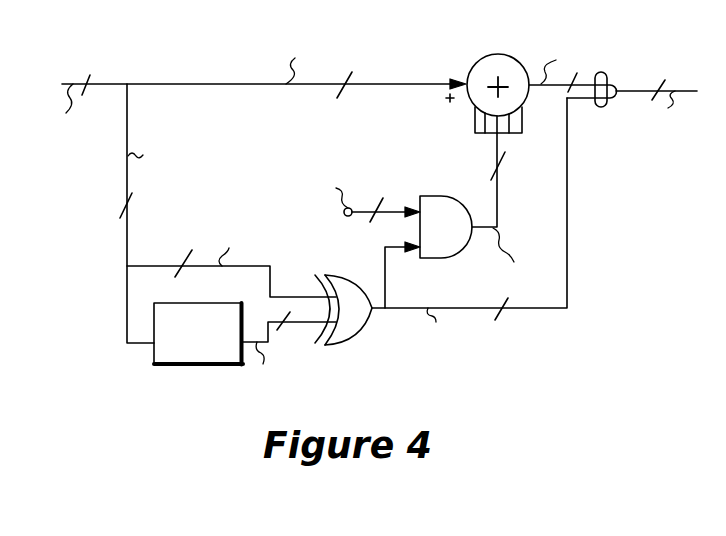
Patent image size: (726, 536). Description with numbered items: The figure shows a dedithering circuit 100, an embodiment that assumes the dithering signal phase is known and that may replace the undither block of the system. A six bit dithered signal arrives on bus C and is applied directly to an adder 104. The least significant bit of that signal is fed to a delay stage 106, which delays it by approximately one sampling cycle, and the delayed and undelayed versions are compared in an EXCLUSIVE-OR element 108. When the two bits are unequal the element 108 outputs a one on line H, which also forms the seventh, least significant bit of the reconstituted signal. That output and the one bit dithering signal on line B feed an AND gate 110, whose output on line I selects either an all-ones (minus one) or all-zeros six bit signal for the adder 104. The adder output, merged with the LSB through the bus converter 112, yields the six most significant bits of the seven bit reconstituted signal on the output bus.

The dedithering circuit 100 is at (657, 403).
The adder 104 is at (509, 60).
The delay stage 106 is at (193, 365).
The EXCLUSIVE-OR element 108 is at (357, 333).
The AND gate 110 is at (450, 196).
The bus converter 112 is at (602, 107).